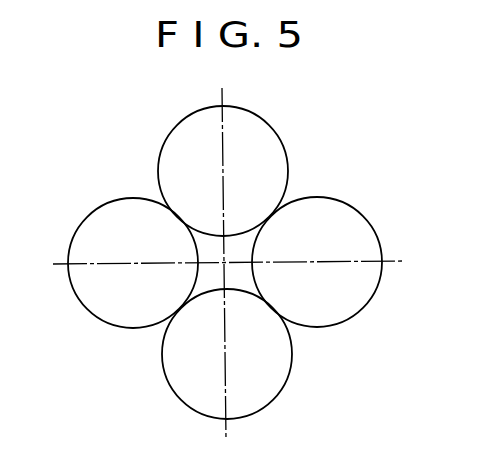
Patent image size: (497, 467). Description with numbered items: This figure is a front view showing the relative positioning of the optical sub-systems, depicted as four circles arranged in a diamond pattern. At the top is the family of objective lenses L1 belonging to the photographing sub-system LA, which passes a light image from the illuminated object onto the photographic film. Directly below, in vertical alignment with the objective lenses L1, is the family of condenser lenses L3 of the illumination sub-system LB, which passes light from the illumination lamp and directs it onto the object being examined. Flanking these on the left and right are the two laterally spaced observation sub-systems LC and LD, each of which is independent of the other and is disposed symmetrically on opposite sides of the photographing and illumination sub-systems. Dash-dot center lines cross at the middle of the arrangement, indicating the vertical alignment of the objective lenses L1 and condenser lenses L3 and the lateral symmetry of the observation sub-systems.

The family of objective lenses L1 is at (368, 151).
The family of condenser lenses L3 is at (380, 390).